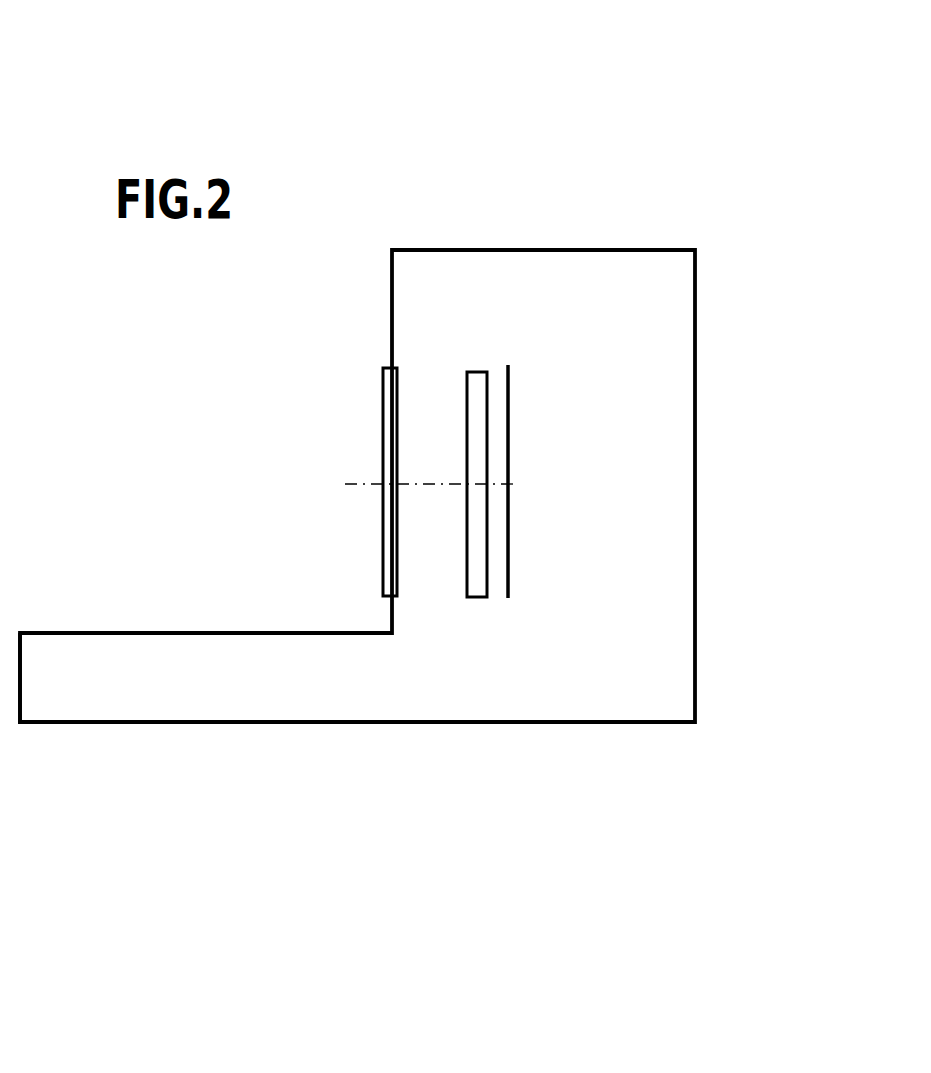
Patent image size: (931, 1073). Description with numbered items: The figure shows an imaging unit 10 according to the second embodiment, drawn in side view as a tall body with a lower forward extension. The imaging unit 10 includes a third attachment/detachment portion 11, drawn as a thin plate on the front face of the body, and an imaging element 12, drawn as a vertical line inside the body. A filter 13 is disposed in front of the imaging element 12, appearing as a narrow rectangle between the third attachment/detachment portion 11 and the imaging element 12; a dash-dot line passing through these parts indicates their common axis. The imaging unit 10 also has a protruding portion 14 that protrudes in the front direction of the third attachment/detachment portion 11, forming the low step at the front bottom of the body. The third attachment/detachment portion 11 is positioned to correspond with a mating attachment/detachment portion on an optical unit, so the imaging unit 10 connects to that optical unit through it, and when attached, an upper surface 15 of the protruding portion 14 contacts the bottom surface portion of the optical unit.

The imaging unit 10 is at (729, 118).
The third attachment/detachment portion 11 is at (388, 428).
The imaging element 12 is at (510, 565).
The filter 13 is at (473, 585).
The protruding portion 14 is at (177, 681).
The upper surface 15 is at (113, 633).